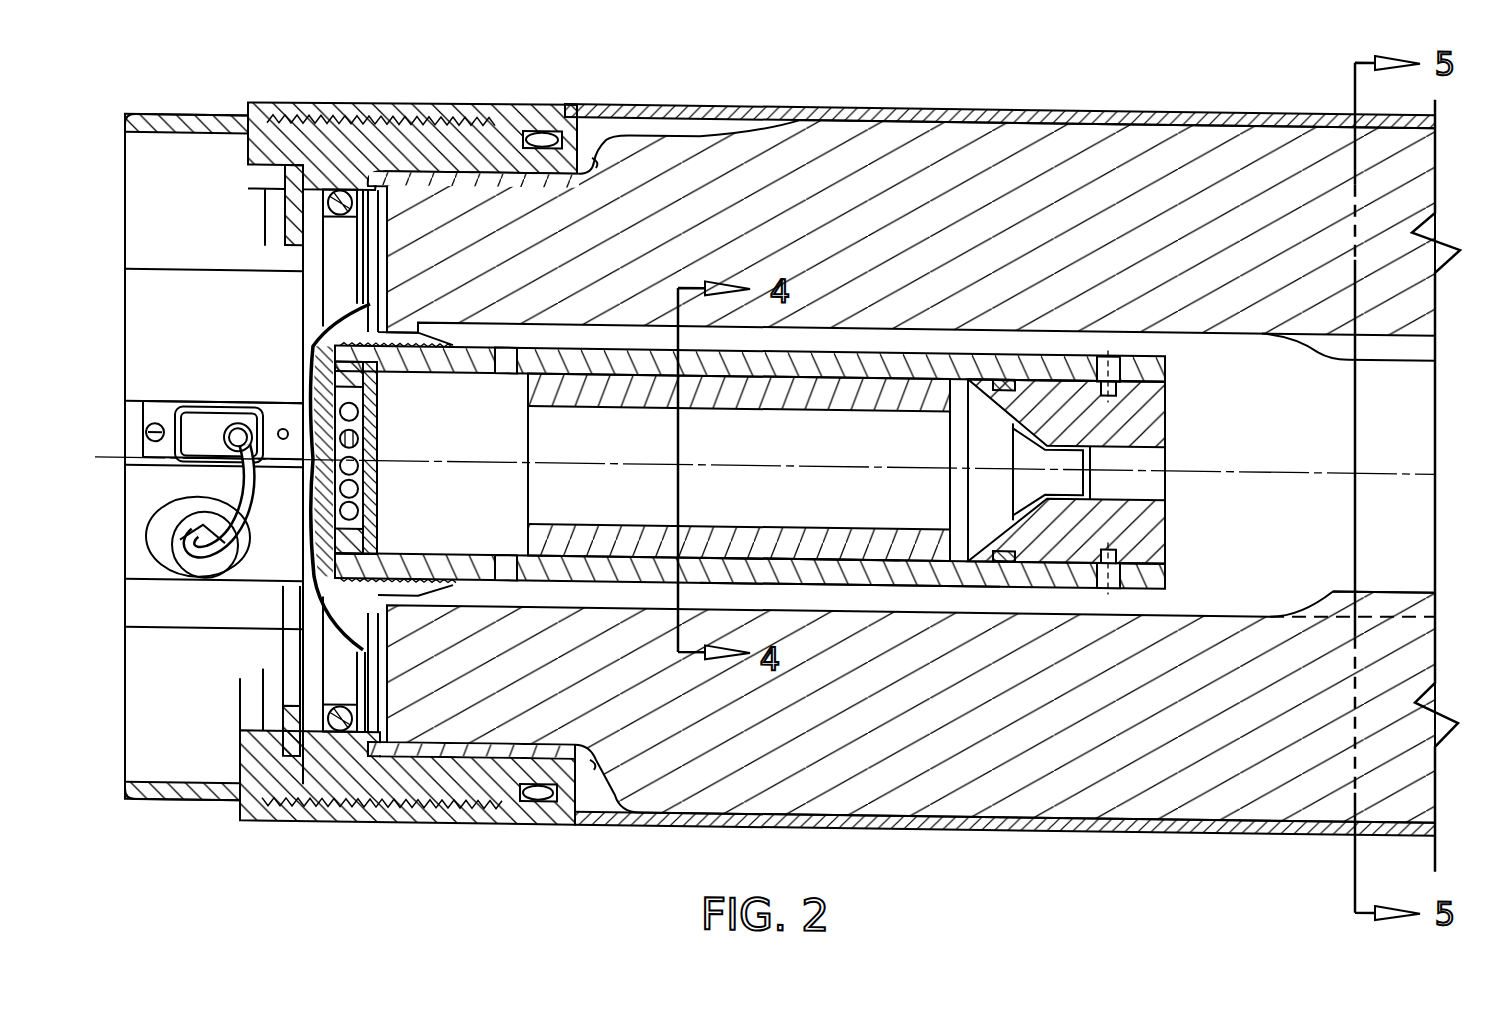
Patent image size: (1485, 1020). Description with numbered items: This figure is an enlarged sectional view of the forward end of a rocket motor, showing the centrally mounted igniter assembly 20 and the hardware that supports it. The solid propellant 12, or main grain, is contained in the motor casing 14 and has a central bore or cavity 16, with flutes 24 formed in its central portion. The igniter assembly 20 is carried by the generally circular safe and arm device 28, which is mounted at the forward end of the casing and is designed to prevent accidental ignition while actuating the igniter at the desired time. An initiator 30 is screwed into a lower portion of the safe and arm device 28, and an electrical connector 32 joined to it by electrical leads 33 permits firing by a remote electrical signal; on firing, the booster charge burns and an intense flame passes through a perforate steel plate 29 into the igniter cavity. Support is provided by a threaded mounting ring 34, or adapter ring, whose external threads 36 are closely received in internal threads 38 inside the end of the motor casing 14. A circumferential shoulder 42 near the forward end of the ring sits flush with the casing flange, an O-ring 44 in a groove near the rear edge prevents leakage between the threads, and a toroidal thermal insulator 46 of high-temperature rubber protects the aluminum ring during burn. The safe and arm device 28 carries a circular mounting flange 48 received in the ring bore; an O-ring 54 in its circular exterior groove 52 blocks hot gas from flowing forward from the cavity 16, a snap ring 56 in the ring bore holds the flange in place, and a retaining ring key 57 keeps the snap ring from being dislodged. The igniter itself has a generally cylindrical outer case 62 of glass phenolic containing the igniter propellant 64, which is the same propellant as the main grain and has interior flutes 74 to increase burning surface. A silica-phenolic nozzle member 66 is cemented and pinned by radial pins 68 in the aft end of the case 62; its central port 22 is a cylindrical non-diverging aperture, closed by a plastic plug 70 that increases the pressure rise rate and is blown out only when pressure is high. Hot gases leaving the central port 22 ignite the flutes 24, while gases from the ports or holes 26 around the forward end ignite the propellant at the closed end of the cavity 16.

The solid propellant 12 is at (908, 126).
The motor casing 14 is at (1112, 104).
The central bore or cavity 16 is at (597, 596).
The igniter assembly 20 is at (810, 318).
The central port 22 is at (1165, 452).
The flutes 24 is at (1377, 352).
The ports or holes 26 is at (506, 350).
The safe and arm device 28 is at (150, 338).
The perforate steel plate 29 is at (378, 443).
The initiator 30 is at (178, 525).
The electrical connector 32 is at (197, 450).
The electrical leads 33 is at (243, 508).
The threaded mounting ring 34 is at (598, 165).
The external threads 36 is at (378, 805).
The internal threads 38 is at (314, 806).
The circumferential shoulder 42 is at (251, 108).
The O-ring 44 is at (540, 133).
The thermal insulator 46 is at (596, 136).
The circular mounting flange 48 is at (372, 268).
The circular exterior groove 52 is at (361, 193).
The O-ring 54 is at (342, 194).
The snap ring 56 is at (285, 722).
The retaining ring key 57 is at (285, 208).
The outer case 62 is at (858, 577).
The igniter propellant 64 is at (838, 526).
The nozzle member 66 is at (1150, 533).
The pins 68 is at (1108, 348).
The plastic plug 70 is at (1085, 482).
The flutes 74 is at (640, 396).